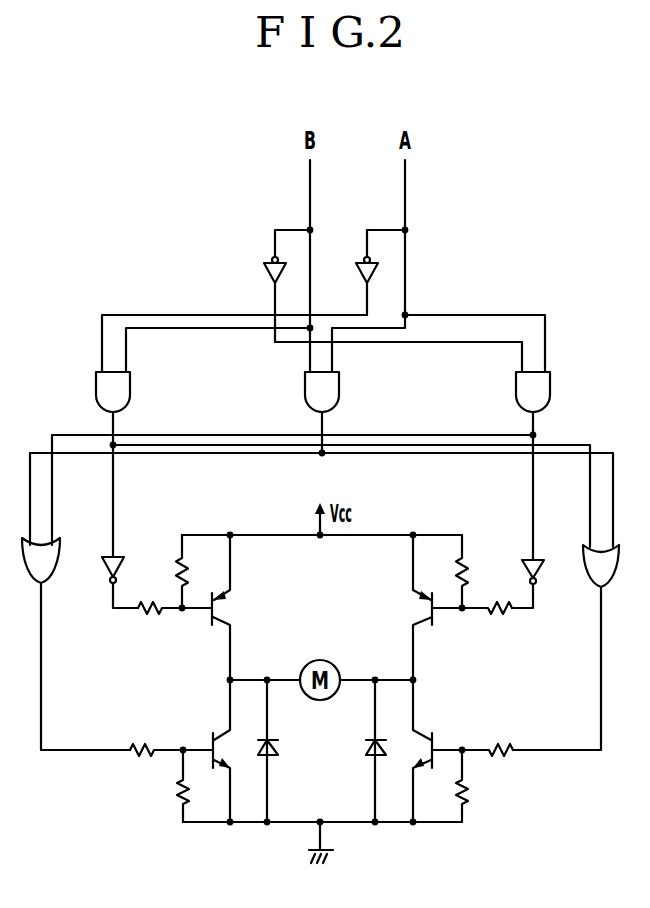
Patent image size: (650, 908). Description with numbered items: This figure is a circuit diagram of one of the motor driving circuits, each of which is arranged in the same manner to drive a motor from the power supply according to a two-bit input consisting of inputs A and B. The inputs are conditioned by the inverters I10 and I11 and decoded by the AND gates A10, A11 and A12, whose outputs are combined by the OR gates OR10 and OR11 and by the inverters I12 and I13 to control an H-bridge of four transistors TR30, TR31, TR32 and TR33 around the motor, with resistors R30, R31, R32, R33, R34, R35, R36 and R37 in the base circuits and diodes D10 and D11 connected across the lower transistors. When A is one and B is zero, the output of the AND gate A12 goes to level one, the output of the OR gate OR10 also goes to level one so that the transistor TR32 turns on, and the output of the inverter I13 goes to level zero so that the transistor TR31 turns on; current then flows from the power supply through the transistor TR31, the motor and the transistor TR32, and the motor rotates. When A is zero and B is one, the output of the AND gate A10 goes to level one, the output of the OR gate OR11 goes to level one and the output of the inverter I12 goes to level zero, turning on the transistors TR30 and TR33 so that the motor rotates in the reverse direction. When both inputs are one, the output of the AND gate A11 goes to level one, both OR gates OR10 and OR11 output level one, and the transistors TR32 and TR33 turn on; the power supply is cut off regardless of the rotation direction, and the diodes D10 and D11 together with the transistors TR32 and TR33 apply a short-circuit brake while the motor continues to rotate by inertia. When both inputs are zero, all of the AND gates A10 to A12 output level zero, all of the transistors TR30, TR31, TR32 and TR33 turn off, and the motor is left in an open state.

The inverter I10 is at (270, 272).
The inverter I11 is at (362, 272).
The inverter I12 is at (122, 566).
The inverter I13 is at (543, 568).
The AND gate A10 is at (130, 390).
The AND gate A11 is at (339, 390).
The AND gate A12 is at (550, 390).
The OR gate OR10 is at (56, 572).
The OR gate OR11 is at (588, 576).
The resistor R30 is at (188, 582).
The resistor R31 is at (154, 614).
The resistor R32 is at (470, 572).
The resistor R33 is at (500, 614).
The resistor R34 is at (138, 742).
The resistor R35 is at (175, 795).
The resistor R36 is at (504, 742).
The resistor R37 is at (472, 793).
The transistor TR30 is at (225, 618).
The transistor TR31 is at (420, 618).
The transistor TR32 is at (224, 732).
The transistor TR33 is at (434, 733).
The diode D10 is at (280, 757).
The diode D11 is at (364, 757).